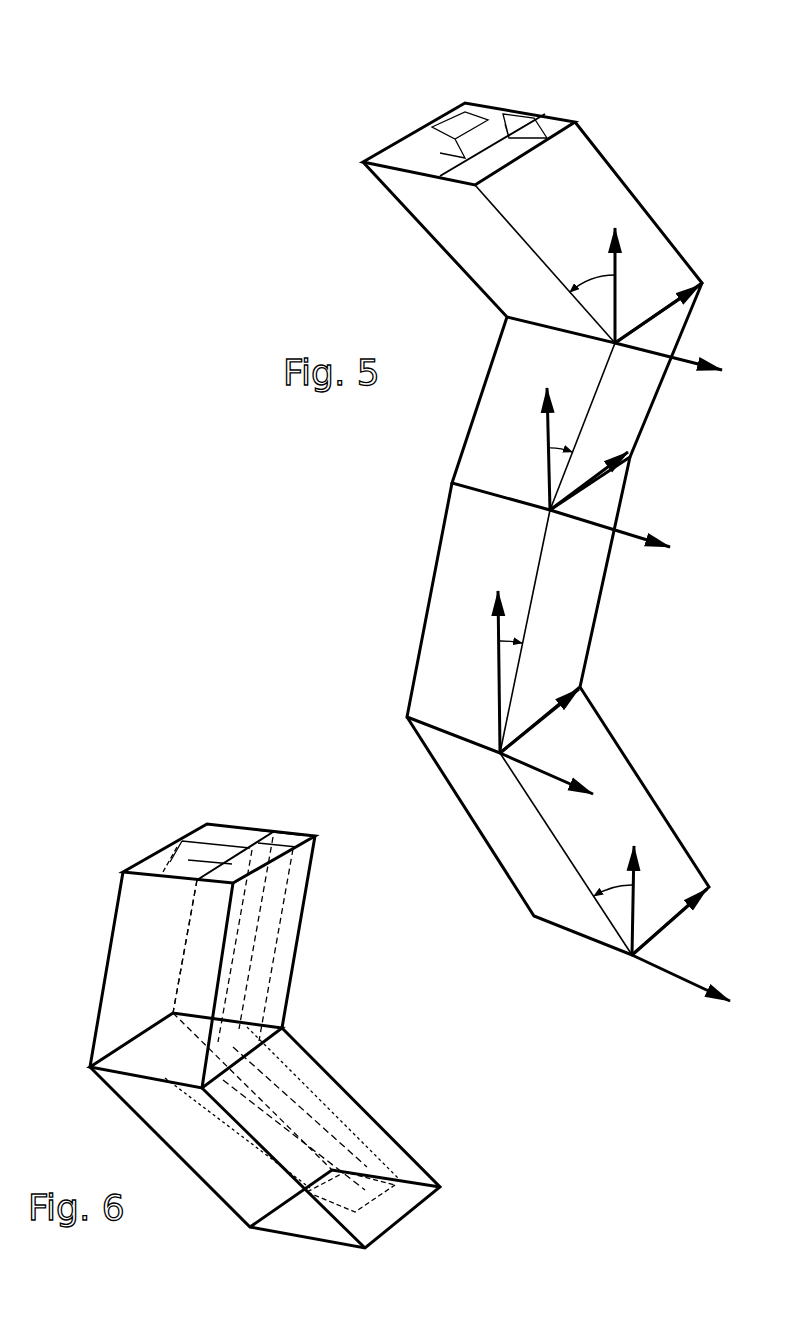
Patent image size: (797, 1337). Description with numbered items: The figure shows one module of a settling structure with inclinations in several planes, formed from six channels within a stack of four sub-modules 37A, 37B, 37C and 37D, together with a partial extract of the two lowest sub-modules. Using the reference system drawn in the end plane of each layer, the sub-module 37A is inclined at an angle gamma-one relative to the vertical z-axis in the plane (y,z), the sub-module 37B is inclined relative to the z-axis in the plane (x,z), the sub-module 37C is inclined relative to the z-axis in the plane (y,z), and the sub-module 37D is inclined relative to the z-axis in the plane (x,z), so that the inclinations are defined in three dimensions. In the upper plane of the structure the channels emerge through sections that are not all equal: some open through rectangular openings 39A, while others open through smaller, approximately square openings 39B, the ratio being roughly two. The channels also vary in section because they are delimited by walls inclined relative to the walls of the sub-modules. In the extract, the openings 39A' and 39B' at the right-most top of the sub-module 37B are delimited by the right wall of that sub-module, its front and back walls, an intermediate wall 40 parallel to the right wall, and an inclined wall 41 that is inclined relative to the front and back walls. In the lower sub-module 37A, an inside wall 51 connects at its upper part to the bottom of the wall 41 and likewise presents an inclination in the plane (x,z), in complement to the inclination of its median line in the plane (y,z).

In FIG. 5, the sub-module 37A is at (659, 794).
In FIG. 6, the sub-module 37A is at (370, 1113).
In FIG. 5, the sub-module 37B is at (600, 607).
In FIG. 6, the sub-module 37B is at (295, 960).
In FIG. 5, the sub-module 37C is at (647, 415).
In FIG. 5, the sub-module 37D is at (677, 248).
In FIG. 5, the rectangular openings 39A is at (523, 103).
In FIG. 5, the smaller openings 39B is at (409, 179).
In FIG. 6, the openings 39A' is at (291, 810).
In FIG. 6, the openings 39B' is at (217, 805).
In FIG. 6, the intermediate wall 40 is at (183, 952).
In FIG. 6, the inclined wall 41 is at (275, 907).
In FIG. 6, the inside wall 51 is at (288, 1108).